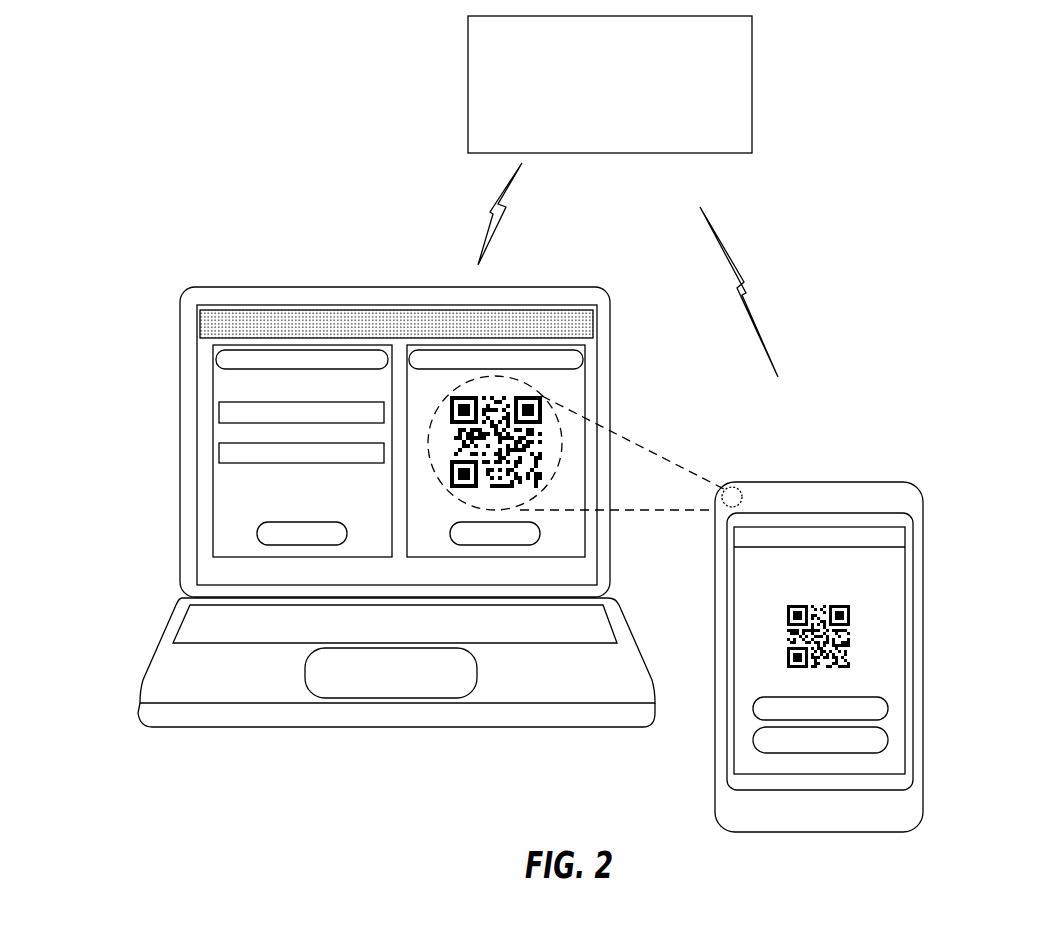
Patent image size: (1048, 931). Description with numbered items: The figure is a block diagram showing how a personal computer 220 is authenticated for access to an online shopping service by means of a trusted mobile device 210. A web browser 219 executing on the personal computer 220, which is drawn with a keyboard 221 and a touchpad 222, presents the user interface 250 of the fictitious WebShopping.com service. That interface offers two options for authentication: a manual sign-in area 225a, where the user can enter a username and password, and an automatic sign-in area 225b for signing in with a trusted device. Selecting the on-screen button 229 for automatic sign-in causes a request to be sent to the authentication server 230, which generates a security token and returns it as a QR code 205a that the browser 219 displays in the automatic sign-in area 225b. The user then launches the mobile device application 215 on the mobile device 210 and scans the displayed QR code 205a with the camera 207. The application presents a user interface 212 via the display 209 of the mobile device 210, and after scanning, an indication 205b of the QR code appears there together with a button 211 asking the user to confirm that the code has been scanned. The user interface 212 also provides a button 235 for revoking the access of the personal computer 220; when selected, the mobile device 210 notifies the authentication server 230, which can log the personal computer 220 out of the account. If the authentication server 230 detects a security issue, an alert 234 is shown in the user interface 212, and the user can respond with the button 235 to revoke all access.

The authentication server 230 is at (623, 105).
The user interface of the shopping service 250 is at (353, 323).
The on-screen button for automatic sign-in 229 is at (561, 349).
The manual sign-in area 225a is at (230, 390).
The automatic sign-in area 225b is at (567, 390).
The QR code 205a is at (513, 437).
The web browser 219 is at (202, 515).
The personal computer 220 is at (570, 693).
The keyboard 221 is at (433, 635).
The touchpad 222 is at (432, 681).
The camera 207 is at (745, 495).
The indication of the QR code 205b is at (852, 617).
The user interface 212 is at (878, 655).
The button 211 is at (880, 707).
The button for revoking access 235 is at (883, 742).
The alert 234 is at (758, 742).
The display 209 is at (900, 780).
The mobile device 210 is at (875, 818).
The mobile device application 215 is at (875, 545).